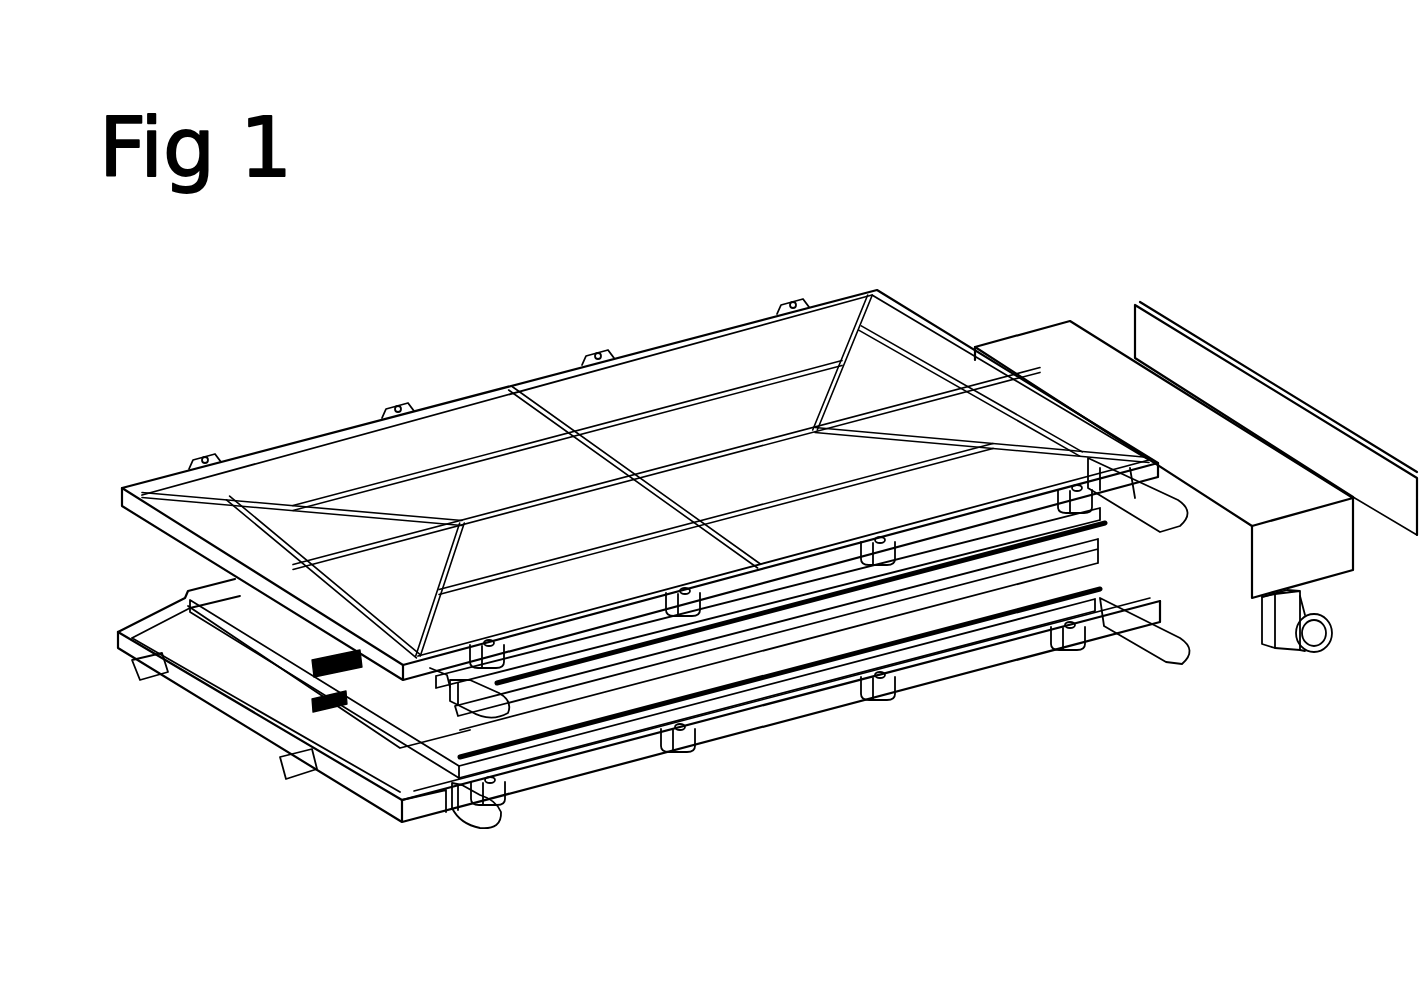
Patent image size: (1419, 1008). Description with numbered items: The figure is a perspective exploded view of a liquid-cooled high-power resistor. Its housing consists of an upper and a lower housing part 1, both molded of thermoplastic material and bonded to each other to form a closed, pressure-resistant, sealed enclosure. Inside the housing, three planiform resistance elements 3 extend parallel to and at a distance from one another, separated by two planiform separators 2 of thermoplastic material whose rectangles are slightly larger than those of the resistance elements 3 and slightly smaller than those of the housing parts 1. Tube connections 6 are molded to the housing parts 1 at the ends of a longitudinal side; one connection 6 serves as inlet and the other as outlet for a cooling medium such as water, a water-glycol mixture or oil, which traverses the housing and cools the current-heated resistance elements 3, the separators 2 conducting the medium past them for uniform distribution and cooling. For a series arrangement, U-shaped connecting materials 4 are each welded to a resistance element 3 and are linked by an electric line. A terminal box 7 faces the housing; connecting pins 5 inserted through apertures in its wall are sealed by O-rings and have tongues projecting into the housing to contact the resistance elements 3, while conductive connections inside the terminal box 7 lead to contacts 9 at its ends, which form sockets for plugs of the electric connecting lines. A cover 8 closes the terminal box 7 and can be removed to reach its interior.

The housing part 1 is at (1005, 655).
The separator 2 is at (897, 675).
The resistance element 3 is at (740, 657).
The connecting material 4 is at (272, 772).
The connecting pin 5 is at (1095, 540).
The connection 6 is at (508, 818).
The terminal box 7 is at (1320, 558).
The cover 8 is at (1326, 418).
The contact 9 is at (1302, 636).